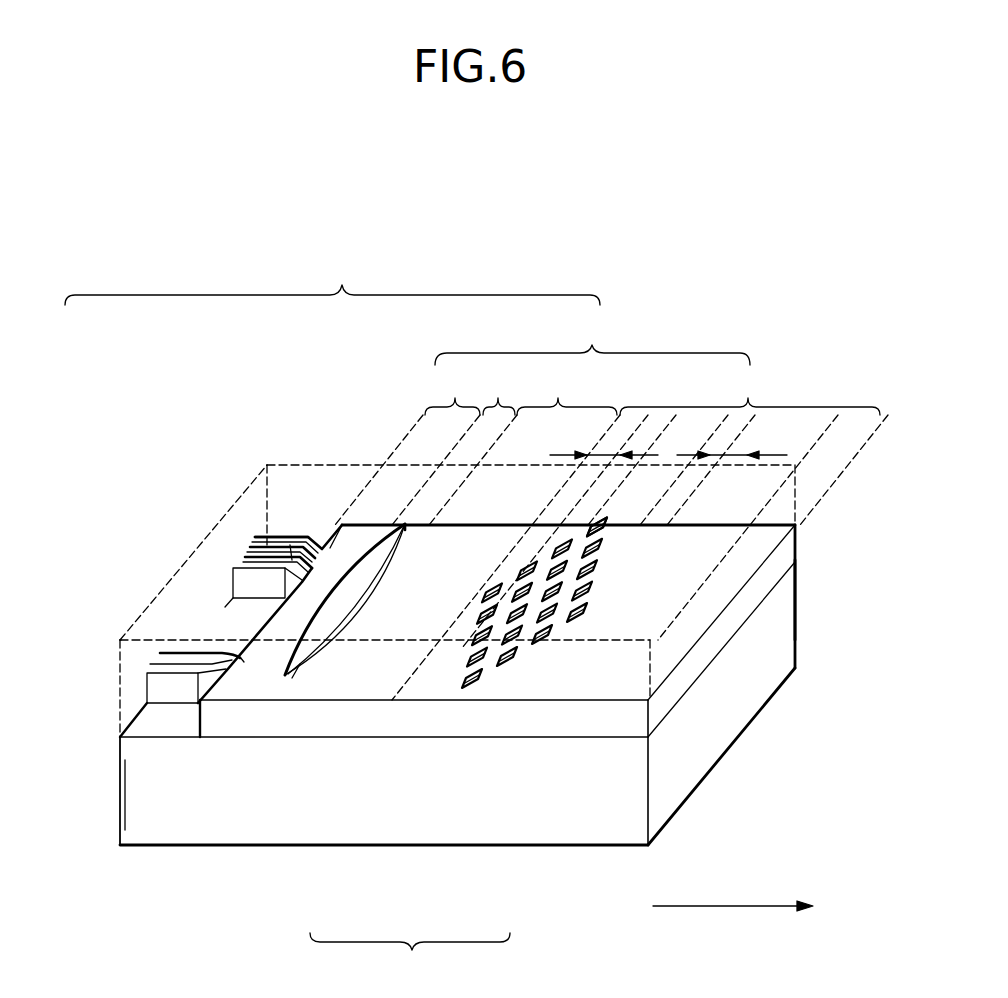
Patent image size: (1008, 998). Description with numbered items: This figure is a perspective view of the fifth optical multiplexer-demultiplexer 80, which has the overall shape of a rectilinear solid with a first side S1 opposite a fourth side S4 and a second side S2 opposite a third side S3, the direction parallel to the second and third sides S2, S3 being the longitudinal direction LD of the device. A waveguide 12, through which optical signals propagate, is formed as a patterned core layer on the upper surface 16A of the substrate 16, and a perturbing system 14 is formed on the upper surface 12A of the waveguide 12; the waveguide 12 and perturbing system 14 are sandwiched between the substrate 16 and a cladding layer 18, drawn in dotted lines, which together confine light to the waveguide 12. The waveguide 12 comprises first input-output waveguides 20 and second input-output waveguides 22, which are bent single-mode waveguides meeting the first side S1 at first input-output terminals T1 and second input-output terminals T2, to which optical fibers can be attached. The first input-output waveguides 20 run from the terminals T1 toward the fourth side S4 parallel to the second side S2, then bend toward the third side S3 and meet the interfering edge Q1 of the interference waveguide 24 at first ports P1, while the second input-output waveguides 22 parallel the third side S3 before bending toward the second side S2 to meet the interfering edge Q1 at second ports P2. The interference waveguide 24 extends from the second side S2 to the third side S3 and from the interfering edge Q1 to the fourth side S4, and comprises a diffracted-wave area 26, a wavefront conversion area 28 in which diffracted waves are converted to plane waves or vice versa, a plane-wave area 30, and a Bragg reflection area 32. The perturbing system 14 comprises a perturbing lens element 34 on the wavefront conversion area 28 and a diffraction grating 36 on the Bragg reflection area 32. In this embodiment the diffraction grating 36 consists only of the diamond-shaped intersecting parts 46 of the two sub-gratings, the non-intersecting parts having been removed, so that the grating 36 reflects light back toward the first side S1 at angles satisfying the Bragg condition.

The fifth optical multiplexer-demultiplexer 80 is at (773, 291).
The waveguide 12 is at (332, 279).
The perturbing system 14 is at (410, 958).
The substrate 16 is at (783, 603).
The upper surface of the substrate 16A is at (243, 615).
The cladding layer 18 is at (795, 512).
The upper surface of the waveguide 12A is at (753, 545).
The first input-output waveguides 20 is at (165, 657).
The second input-output waveguides 22 is at (300, 540).
The interference waveguide 24 is at (611, 508).
The diffracted-wave area 26 is at (407, 444).
The wavefront conversion area 28 is at (473, 444).
The plane-wave area 30 is at (506, 532).
The Bragg reflection area 32 is at (675, 506).
The perturbing lens element 34 is at (308, 680).
The diffraction grating 36 is at (474, 688).
The intersecting parts 46 is at (580, 598).
The first side S1 is at (246, 505).
The second side S2 is at (145, 825).
The third side S3 is at (376, 527).
The fourth side S4 is at (783, 633).
The first input-output terminals T1 is at (152, 657).
The second input-output terminals T2 is at (247, 551).
The first ports P1 is at (240, 660).
The second ports P2 is at (300, 545).
The interfering edge Q1 is at (338, 545).
The longitudinal direction LD is at (733, 922).